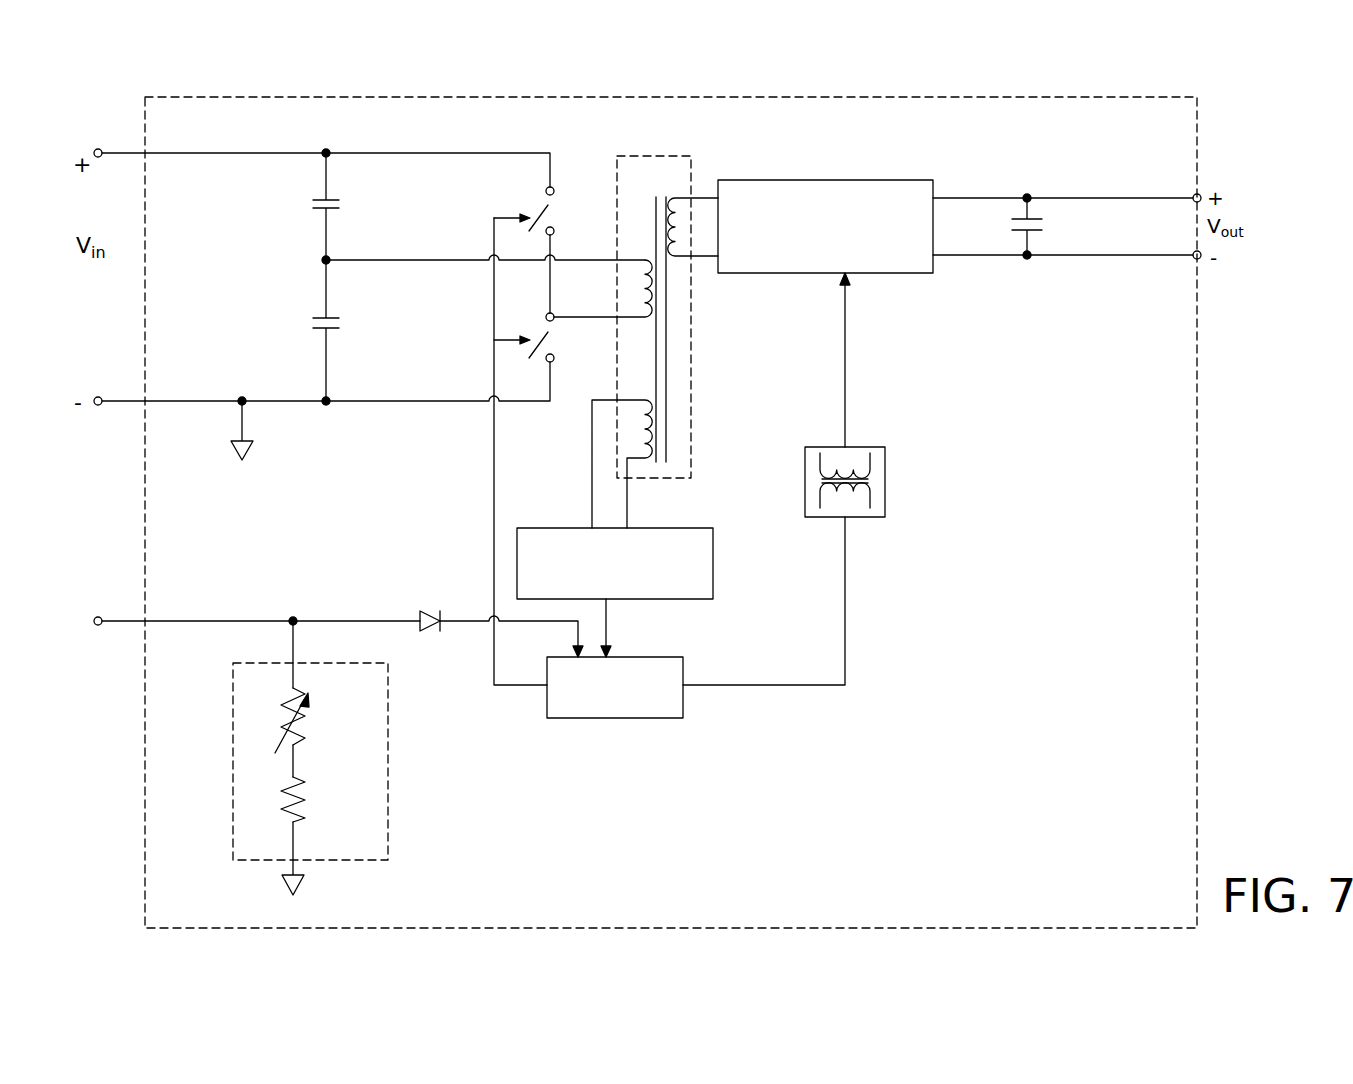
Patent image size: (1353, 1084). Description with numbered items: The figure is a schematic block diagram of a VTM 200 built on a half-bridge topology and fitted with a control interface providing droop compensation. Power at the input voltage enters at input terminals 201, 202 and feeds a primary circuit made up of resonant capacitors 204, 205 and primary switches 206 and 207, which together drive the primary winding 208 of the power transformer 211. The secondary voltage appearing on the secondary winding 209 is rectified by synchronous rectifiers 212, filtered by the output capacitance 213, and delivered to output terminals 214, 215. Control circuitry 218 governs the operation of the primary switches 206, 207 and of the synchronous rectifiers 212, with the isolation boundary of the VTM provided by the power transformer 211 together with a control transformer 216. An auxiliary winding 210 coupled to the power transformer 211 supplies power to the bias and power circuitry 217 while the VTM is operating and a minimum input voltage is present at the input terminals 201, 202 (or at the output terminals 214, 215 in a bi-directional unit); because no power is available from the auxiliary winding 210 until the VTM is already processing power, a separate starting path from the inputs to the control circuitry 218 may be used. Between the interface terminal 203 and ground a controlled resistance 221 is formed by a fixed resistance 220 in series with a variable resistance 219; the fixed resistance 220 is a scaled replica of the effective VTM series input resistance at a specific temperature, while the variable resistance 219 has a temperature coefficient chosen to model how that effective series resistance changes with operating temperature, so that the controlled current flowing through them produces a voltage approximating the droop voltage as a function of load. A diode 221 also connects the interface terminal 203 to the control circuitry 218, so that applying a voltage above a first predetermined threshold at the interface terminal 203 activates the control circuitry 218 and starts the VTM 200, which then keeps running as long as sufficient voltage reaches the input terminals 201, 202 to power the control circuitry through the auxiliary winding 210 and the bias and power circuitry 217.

The VTM 200 is at (855, 97).
The input terminal 201 is at (312, 153).
The input terminal 202 is at (312, 411).
The interface terminal 203 is at (247, 607).
The resonant capacitor 204 is at (300, 210).
The resonant capacitor 205 is at (300, 330).
The primary switch 206 is at (519, 210).
The primary switch 207 is at (546, 298).
The primary winding 208 is at (603, 272).
The secondary winding 209 is at (689, 211).
The auxiliary winding 210 is at (622, 448).
The power transformer 211 is at (673, 156).
The synchronous rectifiers 212 is at (865, 180).
The output capacitance 213 is at (1034, 212).
The output terminal 214 is at (1231, 182).
The output terminal 215 is at (1230, 269).
The control transformer 216 is at (885, 480).
The bias and power circuitry 217 is at (713, 557).
The control circuitry 218 is at (683, 670).
The variable resistance 219 is at (316, 720).
The fixed resistance 220 is at (319, 799).
The controlled resistance / diode 221 is at (408, 730).